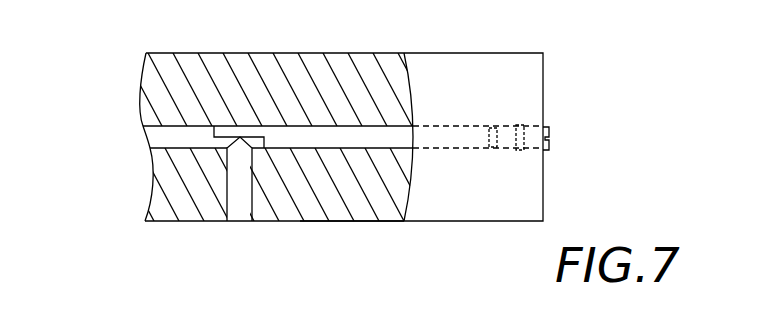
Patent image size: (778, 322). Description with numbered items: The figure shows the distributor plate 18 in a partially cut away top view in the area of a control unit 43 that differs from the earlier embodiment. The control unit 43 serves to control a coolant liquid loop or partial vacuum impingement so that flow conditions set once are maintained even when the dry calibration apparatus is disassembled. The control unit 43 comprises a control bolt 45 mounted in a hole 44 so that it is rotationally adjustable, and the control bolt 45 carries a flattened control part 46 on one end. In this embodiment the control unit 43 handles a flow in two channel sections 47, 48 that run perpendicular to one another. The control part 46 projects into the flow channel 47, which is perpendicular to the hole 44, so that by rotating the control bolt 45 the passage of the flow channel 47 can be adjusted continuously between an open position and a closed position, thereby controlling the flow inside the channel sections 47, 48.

The distributor plate 18 is at (163, 88).
The control unit 43 is at (208, 150).
The hole 44 is at (302, 148).
The control bolt 45 is at (347, 148).
The control part 46 is at (244, 130).
The flow channel 47 is at (243, 198).
The channel section 48 is at (193, 136).